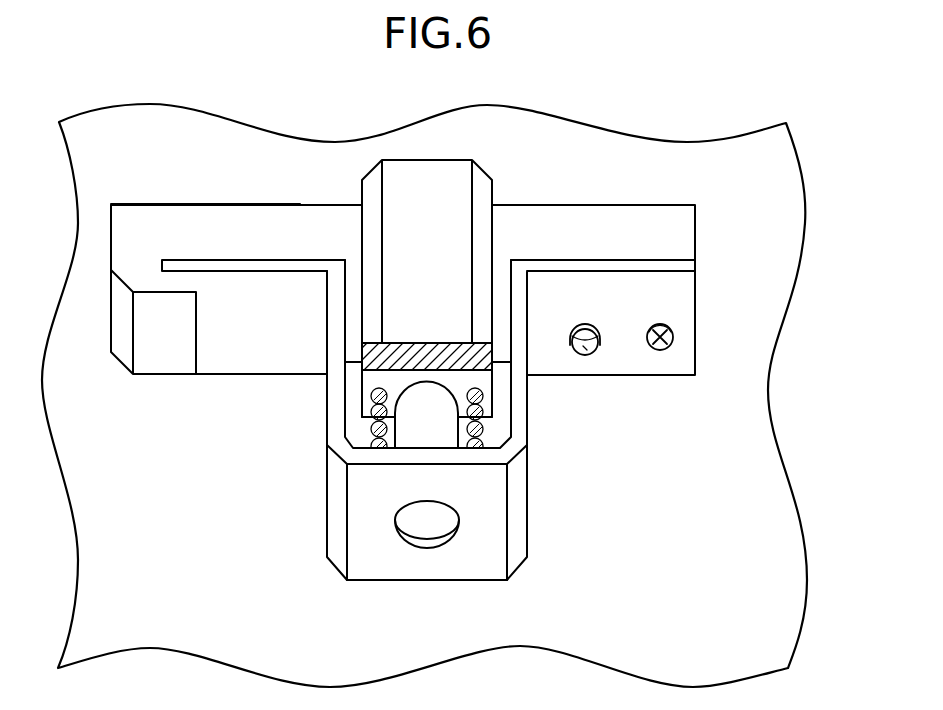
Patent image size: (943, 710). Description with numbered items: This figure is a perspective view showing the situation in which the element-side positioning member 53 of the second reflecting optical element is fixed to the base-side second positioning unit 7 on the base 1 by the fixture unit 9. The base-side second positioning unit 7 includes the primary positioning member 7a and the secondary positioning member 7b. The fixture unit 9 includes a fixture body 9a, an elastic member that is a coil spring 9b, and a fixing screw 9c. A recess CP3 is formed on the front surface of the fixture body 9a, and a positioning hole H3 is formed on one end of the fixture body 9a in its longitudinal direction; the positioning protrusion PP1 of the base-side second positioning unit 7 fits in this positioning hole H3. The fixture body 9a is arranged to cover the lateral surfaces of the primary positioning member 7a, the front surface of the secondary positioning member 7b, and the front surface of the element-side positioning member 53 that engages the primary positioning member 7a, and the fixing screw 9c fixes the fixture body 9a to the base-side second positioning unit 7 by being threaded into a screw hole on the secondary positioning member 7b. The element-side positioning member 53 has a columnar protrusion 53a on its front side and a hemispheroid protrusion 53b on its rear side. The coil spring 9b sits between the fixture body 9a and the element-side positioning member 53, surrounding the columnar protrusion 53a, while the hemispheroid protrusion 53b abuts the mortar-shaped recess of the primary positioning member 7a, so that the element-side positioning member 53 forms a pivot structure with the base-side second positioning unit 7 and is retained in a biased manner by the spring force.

The base 1 is at (753, 545).
The base-side second positioning unit 7 is at (614, 215).
The primary positioning member 7a is at (433, 173).
The secondary positioning member 7b is at (221, 221).
The fixture unit 9 is at (516, 443).
The fixture body 9a is at (386, 568).
The coil spring 9b is at (494, 433).
The fixing screw 9c is at (665, 348).
The element-side positioning member 53 is at (389, 385).
The columnar protrusion 53a is at (427, 427).
The hemispheroid protrusion 53b is at (425, 350).
The positioning hole H3 is at (578, 325).
The positioning protrusion PP1 is at (586, 347).
The recess CP3 is at (428, 523).